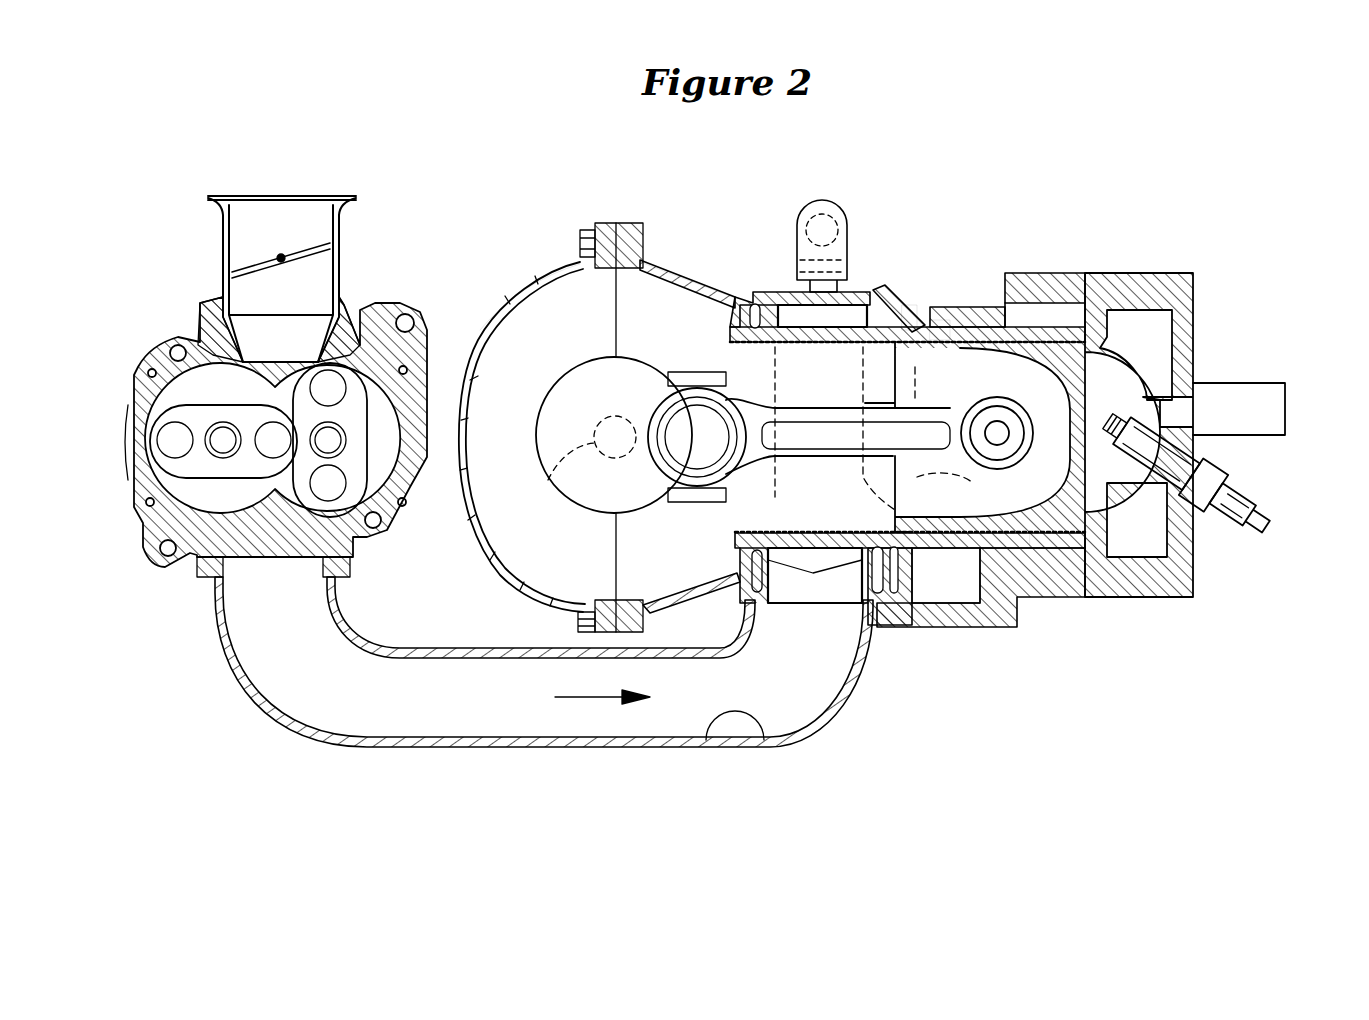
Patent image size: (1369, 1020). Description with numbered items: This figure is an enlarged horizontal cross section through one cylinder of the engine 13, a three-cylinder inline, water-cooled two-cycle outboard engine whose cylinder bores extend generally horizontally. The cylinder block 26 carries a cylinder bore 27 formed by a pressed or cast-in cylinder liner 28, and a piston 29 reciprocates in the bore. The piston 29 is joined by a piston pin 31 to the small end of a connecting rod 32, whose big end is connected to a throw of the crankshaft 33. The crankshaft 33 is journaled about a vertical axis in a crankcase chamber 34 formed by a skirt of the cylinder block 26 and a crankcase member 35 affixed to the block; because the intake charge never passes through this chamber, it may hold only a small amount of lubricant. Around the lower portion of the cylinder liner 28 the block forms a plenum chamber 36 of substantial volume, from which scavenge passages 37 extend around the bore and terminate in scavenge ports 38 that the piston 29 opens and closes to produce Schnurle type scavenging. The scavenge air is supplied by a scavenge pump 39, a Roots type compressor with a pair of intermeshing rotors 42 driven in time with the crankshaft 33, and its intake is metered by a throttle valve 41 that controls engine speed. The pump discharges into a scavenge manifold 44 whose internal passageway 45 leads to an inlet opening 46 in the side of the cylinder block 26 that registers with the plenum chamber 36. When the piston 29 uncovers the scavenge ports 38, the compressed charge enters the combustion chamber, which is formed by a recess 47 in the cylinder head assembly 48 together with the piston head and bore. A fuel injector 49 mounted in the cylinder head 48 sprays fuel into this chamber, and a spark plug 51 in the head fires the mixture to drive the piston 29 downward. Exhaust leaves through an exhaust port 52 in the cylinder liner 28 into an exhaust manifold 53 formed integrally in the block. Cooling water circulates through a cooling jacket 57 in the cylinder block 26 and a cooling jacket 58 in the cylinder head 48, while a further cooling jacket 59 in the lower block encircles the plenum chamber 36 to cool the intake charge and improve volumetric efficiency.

The engine 13 is at (1090, 250).
The cylinder block 26 is at (680, 282).
The cylinder bores 27 is at (903, 326).
The cylinder liners 28 is at (1020, 322).
The pistons 29 is at (1052, 534).
The piston pins 31 is at (1000, 432).
The connecting rods 32 is at (778, 440).
The crankshaft 33 is at (552, 476).
The crankcase chamber 34 is at (528, 393).
The crankcase member 35 is at (545, 272).
The plenum chamber 36 is at (855, 312).
The scavenge passages 37 is at (950, 325).
The scavenge ports 38 is at (930, 437).
The scavenge pump 39 is at (131, 369).
The throttle valve 41 is at (307, 250).
The intermeshing rotors 42 is at (185, 410).
The scavenge manifold 44 is at (763, 742).
The internal passageway 45 is at (460, 713).
The inlet opening 46 is at (773, 603).
The recess 47 is at (1125, 408).
The cylinder head assembly 48 is at (1160, 588).
The fuel injector 49 is at (1258, 384).
The spark plugs 51 is at (1250, 500).
The exhaust port 52 is at (1020, 590).
The exhaust manifold 53 is at (925, 582).
The cooling jacket 57 is at (1072, 318).
The cooling jacket 58 is at (1150, 322).
The cooling jacket 59 is at (742, 307).